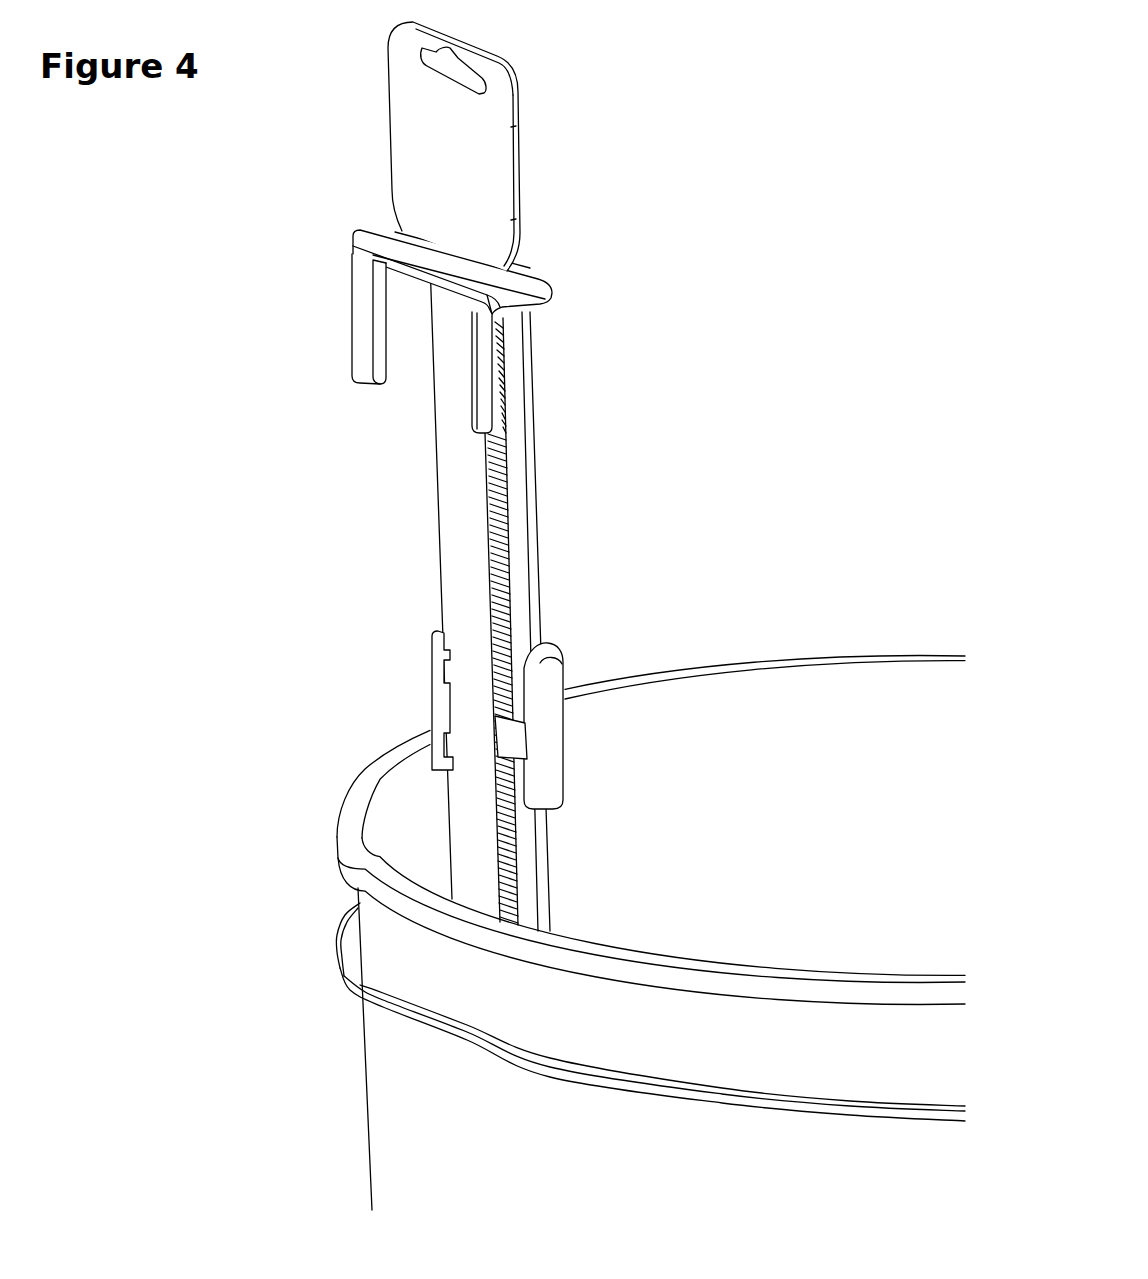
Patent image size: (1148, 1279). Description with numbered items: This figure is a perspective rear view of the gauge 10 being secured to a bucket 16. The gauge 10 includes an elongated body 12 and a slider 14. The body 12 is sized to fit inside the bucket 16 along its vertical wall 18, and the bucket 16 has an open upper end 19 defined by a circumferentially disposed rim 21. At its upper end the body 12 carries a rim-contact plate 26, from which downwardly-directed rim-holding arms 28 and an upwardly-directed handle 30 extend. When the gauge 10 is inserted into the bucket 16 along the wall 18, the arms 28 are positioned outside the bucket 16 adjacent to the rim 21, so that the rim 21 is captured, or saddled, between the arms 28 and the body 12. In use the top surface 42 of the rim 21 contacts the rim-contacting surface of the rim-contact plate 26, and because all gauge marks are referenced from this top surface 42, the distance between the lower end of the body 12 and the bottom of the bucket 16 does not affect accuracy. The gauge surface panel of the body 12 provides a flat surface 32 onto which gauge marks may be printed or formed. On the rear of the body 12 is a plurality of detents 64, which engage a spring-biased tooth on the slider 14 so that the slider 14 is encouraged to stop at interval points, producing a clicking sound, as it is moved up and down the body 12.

The gauge 10 is at (709, 170).
The body 12 is at (517, 398).
The slider 14 is at (438, 698).
The bucket 16 is at (392, 1155).
The vertical wall 18 is at (828, 796).
The open upper end 19 is at (866, 697).
The rim 21 is at (592, 963).
The rim-contact plate 26 is at (527, 274).
The rim-holding arms 28 is at (362, 325).
The handle 30 is at (410, 142).
The flat surface 32 is at (452, 498).
The top surface 42 is at (348, 833).
The detents 64 is at (505, 582).